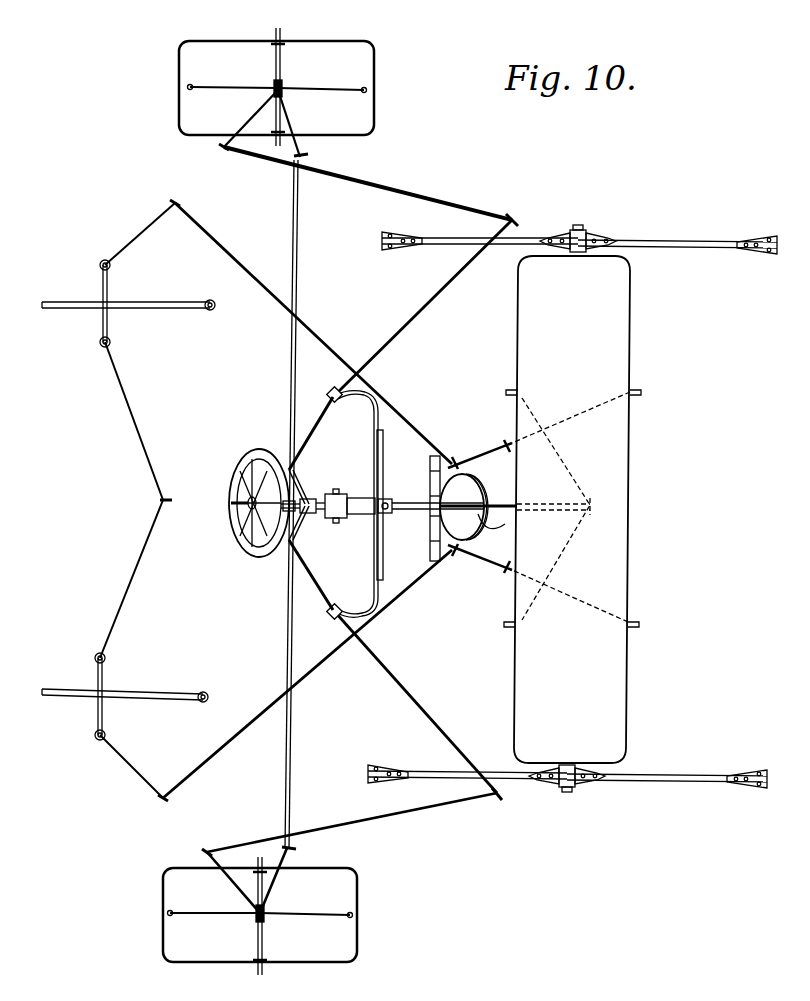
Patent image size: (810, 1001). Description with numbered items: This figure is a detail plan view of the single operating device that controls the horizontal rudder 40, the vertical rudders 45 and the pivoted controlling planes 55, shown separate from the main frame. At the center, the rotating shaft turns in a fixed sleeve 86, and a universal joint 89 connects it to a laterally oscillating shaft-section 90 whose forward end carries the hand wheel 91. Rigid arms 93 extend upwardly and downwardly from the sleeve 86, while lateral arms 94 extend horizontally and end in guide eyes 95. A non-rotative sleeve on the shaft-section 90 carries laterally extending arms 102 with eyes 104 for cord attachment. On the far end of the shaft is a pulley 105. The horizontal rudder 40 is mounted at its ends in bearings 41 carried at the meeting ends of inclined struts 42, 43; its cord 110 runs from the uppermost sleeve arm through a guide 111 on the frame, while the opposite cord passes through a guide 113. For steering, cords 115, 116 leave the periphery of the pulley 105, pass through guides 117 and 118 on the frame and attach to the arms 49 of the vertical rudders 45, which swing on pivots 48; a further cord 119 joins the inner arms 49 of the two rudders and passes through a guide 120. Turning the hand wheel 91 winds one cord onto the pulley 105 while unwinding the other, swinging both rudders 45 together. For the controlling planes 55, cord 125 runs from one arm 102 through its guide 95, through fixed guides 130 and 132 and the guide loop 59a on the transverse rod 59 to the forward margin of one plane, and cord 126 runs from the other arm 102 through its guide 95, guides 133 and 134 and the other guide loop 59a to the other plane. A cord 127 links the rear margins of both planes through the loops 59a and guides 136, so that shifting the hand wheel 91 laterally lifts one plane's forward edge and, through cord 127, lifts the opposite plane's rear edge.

The horizontal rudder 40 is at (627, 546).
The bearing 41 is at (584, 230).
The inclined strut 42 is at (686, 238).
The inclined strut 43 is at (442, 238).
The vertical steering rudder 45 is at (72, 308).
The vertical pivot 48 is at (212, 311).
The rigid arm 49 is at (108, 292).
The controlling plane 55 is at (268, 501).
The transverse rod 59 is at (283, 50).
The guide loop 59a is at (275, 86).
The fixed sleeve 86 is at (401, 501).
The universal joint 89 is at (340, 519).
The oscillating shaft-section 90 is at (311, 515).
The hand wheel 91 is at (237, 536).
The radial arm 93 is at (387, 515).
The lateral arm 94 is at (380, 412).
The guide eye 95 is at (330, 394).
The lateral sleeve arm 102 is at (308, 498).
The eye 104 is at (291, 450).
The pulley 105 is at (488, 492).
The cord 110 is at (500, 531).
The guide 111 is at (620, 506).
The guide 113 is at (428, 531).
The cord 115 is at (322, 340).
The cord 116 is at (316, 672).
The guide 117 is at (182, 204).
The guide 118 is at (168, 800).
The cord 119 is at (148, 436).
The guide 120 is at (160, 503).
The cord 125 is at (322, 95).
The cord 126 is at (413, 697).
The cord 127 is at (240, 94).
The fixed guide 130 is at (514, 218).
The fixed guide 132 is at (220, 146).
The guide 133 is at (497, 800).
The guide 134 is at (208, 848).
The guide 136 is at (312, 157).